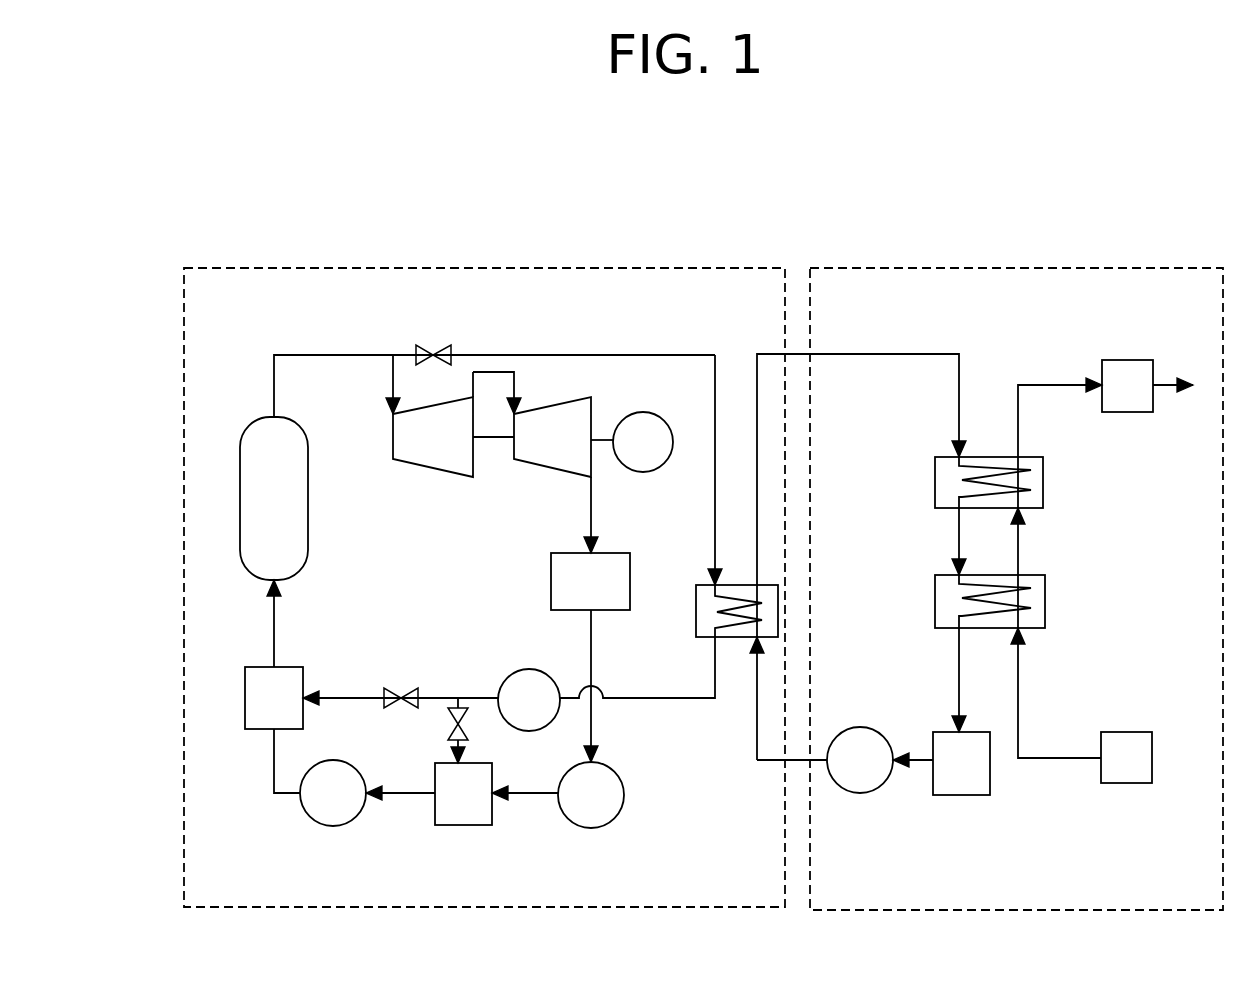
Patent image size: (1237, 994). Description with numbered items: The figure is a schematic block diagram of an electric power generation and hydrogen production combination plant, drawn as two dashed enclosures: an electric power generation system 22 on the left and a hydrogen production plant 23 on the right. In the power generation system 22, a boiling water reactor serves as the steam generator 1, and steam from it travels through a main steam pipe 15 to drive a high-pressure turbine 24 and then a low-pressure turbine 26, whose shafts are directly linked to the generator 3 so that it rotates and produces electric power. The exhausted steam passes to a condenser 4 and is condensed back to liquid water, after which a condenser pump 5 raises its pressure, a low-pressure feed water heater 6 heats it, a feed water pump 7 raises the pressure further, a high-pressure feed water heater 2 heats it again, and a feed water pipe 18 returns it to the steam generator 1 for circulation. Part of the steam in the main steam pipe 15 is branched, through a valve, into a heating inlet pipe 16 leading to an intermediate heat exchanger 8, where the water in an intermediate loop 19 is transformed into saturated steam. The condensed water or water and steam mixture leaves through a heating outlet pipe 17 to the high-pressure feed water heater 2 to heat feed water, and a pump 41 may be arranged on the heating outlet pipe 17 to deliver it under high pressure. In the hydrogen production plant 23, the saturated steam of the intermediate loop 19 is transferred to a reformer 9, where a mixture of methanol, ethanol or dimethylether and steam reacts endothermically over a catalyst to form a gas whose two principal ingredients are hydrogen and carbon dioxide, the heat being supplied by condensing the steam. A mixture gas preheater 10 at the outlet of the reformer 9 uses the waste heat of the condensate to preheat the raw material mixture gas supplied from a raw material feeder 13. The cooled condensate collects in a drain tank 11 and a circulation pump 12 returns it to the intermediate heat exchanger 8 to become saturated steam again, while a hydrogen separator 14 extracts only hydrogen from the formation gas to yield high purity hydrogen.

The steam generator 1 is at (308, 490).
The high-pressure feed water heater 2 is at (245, 718).
The generator 3 is at (648, 472).
The condenser 4 is at (551, 590).
The condenser pump 5 is at (591, 828).
The low-pressure feed water heater 6 is at (467, 826).
The feed water pump 7 is at (334, 826).
The intermediate heat exchanger 8 is at (779, 600).
The reformer 9 is at (1043, 470).
The mixture gas preheater 10 is at (1045, 594).
The drain tank 11 is at (958, 795).
The circulation pump 12 is at (843, 793).
The raw material feeder 13 is at (1118, 783).
The hydrogen separator 14 is at (1117, 360).
The main steam pipe 15 is at (345, 355).
The heating inlet pipe 16 is at (690, 354).
The heating outlet pipe 17 is at (681, 704).
The feed water pipe 18 is at (276, 620).
The intermediate loop 19 is at (892, 354).
The electric power generation system 22 is at (505, 268).
The hydrogen production plant 23 is at (1055, 268).
The high-pressure turbine 24 is at (423, 478).
The low-pressure turbine 26 is at (541, 478).
The pump 41 is at (500, 690).